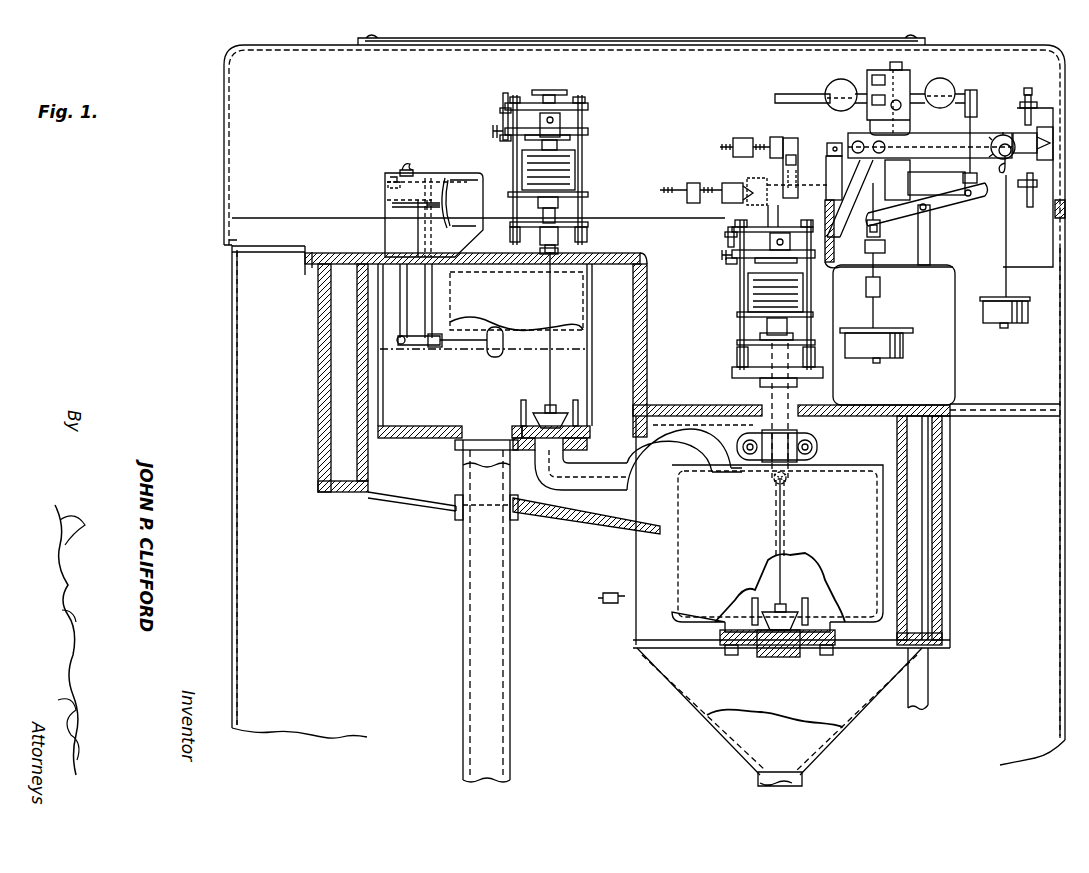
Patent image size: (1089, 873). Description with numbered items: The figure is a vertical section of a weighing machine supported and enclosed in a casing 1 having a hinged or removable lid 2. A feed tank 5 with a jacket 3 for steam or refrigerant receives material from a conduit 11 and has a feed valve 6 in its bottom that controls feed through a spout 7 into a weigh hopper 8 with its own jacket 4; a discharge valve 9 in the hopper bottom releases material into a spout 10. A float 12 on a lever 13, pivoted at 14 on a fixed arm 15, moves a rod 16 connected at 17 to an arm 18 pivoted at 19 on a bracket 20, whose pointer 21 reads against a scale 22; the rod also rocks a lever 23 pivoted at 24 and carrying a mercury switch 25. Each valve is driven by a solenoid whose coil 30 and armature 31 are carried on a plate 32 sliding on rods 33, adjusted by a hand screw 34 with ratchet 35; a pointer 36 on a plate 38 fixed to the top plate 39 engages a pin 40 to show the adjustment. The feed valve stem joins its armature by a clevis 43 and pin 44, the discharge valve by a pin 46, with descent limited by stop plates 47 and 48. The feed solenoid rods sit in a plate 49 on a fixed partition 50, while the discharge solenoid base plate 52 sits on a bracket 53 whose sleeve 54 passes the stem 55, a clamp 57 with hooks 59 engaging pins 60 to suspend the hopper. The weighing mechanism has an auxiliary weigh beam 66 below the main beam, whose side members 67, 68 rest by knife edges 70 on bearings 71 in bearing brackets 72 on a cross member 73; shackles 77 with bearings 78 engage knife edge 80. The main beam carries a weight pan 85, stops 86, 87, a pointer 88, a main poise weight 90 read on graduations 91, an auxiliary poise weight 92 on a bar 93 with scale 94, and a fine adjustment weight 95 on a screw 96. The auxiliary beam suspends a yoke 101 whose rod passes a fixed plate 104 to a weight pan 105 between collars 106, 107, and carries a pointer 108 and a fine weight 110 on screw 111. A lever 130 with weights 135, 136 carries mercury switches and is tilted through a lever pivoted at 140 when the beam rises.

The casing 1 is at (230, 385).
The lid 2 is at (222, 140).
The jacket 3 is at (340, 425).
The jacket 4 is at (905, 553).
The feed tank 5 is at (485, 351).
The feed valve 6 is at (545, 410).
The spout 7 is at (567, 478).
The weigh hopper 8 is at (829, 526).
The discharge valve 9 is at (787, 617).
The spout 10 is at (807, 752).
The conduit 11 is at (475, 672).
The float 12 is at (515, 328).
The lever 13 is at (433, 347).
The pivot 14 is at (403, 345).
The arm 15 is at (412, 321).
The rod 16 is at (420, 302).
The pivot connection 17 is at (430, 193).
The arm 18 is at (418, 205).
The pivot 19 is at (393, 205).
The bracket 20 is at (385, 238).
The pointer 21 is at (470, 193).
The scale 22 is at (455, 180).
The lever 23 is at (390, 180).
The pivot 24 is at (393, 183).
The mercury switch 25 is at (407, 170).
The coil 30 is at (576, 175).
The armature 31 is at (558, 208).
The plate 32 is at (567, 130).
The vertical rods 33 is at (583, 148).
The hand screw 34 is at (557, 102).
The ratchet 35 is at (567, 110).
The indicating arm 36 is at (500, 140).
The plate 38 is at (503, 112).
The top plate 39 is at (535, 103).
The pin 40 is at (493, 131).
The clevis 43 is at (588, 232).
The pin 44 is at (530, 222).
The pin 46 is at (765, 340).
The stop plate 47 is at (512, 236).
The stop plate 48 is at (755, 352).
The plate 49 is at (598, 250).
The partition 50 is at (638, 258).
The base plate 52 is at (825, 374).
The bracket 53 is at (740, 382).
The sleeve 54 is at (795, 402).
The stem 55 is at (778, 578).
The clamp 57 is at (808, 440).
The hooks 59 is at (790, 480).
The pins 60 is at (774, 478).
The auxiliary weigh beam 66 is at (848, 190).
The side member 67 is at (1016, 122).
The side member 68 is at (997, 138).
The knife edges 70 is at (830, 142).
The bearings 71 is at (838, 147).
The bearing brackets 72 is at (800, 185).
The cross member 73 is at (826, 262).
The shackles 77 is at (775, 140).
The bearing 78 is at (792, 140).
The knife edge 80 is at (793, 160).
The weight pan 85 is at (988, 325).
The adjustable stop 86 is at (1028, 93).
The adjustable stop 87 is at (1012, 208).
The pointer 88 is at (1040, 133).
The main poise weight 90 is at (935, 147).
The graduations 91 is at (969, 140).
The auxiliary poise weight 92 is at (900, 179).
The bar 93 is at (940, 208).
The scale 94 is at (942, 175).
The fine adjustment weight 95 is at (742, 138).
The screw 96 is at (725, 148).
The yoke 101 is at (880, 232).
The plate 104 is at (912, 268).
The weight pan 105 is at (890, 362).
The collar 106 is at (885, 248).
The collar 107 is at (870, 282).
The pointer 108 is at (740, 188).
The fine adjustment weight 110 is at (690, 192).
The screw 111 is at (718, 216).
The lever 130 is at (775, 97).
The weight 135 is at (843, 88).
The weight 136 is at (942, 83).
The pivot 140 is at (930, 228).